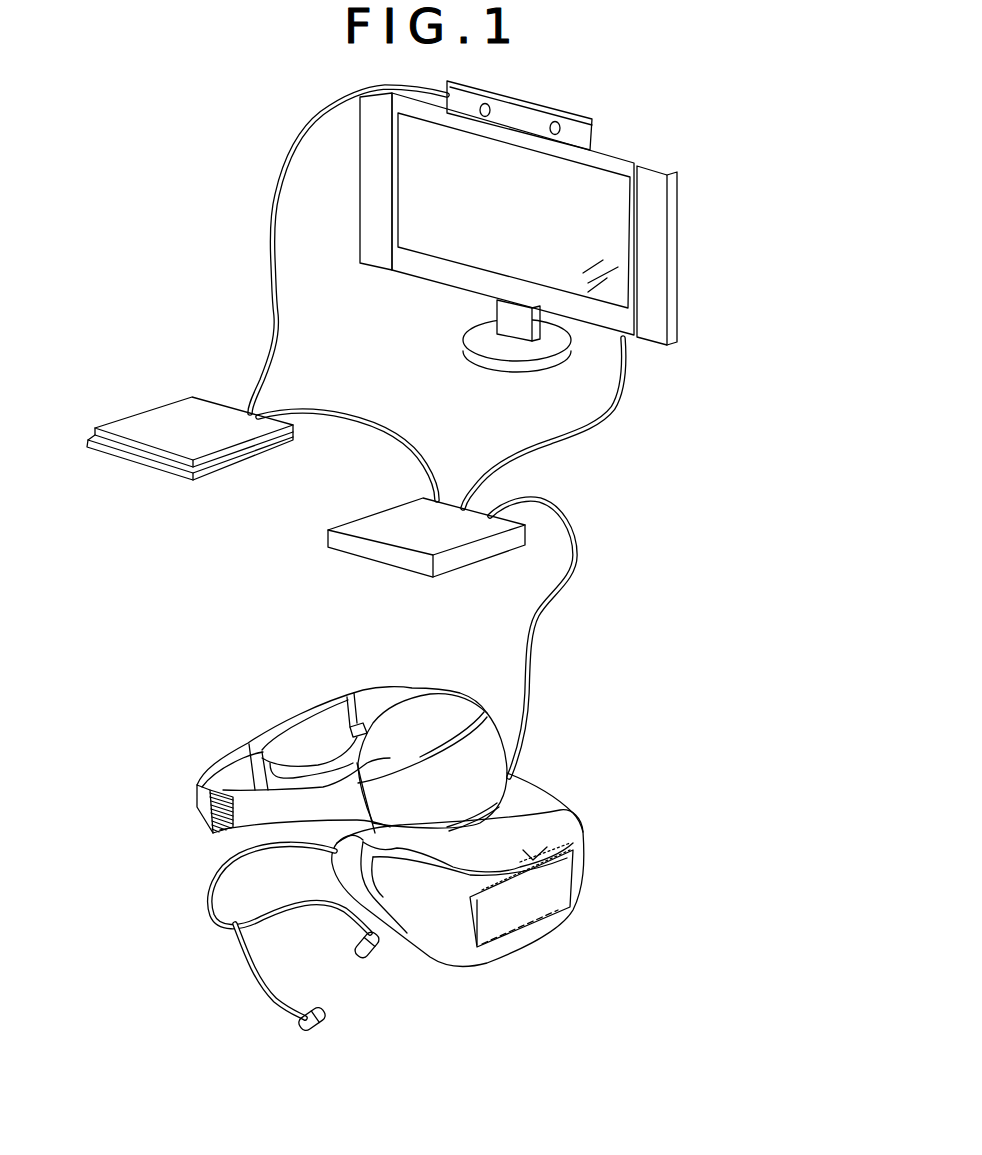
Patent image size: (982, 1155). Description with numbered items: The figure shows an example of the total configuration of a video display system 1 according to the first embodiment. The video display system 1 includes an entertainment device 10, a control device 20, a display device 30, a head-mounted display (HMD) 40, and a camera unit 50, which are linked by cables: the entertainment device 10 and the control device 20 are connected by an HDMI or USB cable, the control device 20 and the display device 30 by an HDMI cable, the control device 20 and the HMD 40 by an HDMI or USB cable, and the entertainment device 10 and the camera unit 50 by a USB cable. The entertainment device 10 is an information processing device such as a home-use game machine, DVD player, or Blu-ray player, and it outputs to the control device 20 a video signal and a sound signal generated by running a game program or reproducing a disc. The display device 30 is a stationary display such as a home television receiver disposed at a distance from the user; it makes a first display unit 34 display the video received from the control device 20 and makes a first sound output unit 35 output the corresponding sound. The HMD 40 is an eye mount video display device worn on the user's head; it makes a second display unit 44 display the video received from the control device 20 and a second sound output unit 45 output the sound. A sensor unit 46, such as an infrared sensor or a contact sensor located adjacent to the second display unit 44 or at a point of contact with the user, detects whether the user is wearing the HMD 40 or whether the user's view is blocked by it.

The video display system 1 is at (106, 201).
The entertainment device 10 is at (141, 414).
The control device 20 is at (372, 506).
The display device 30 is at (430, 283).
The first display unit 34 is at (608, 176).
The first sound output unit 35 is at (377, 270).
The head-mounted display 40 is at (421, 876).
The second display unit 44 is at (578, 863).
The second sound output unit 45 is at (318, 1030).
The sensor unit 46 is at (578, 814).
The camera unit 50 is at (557, 113).